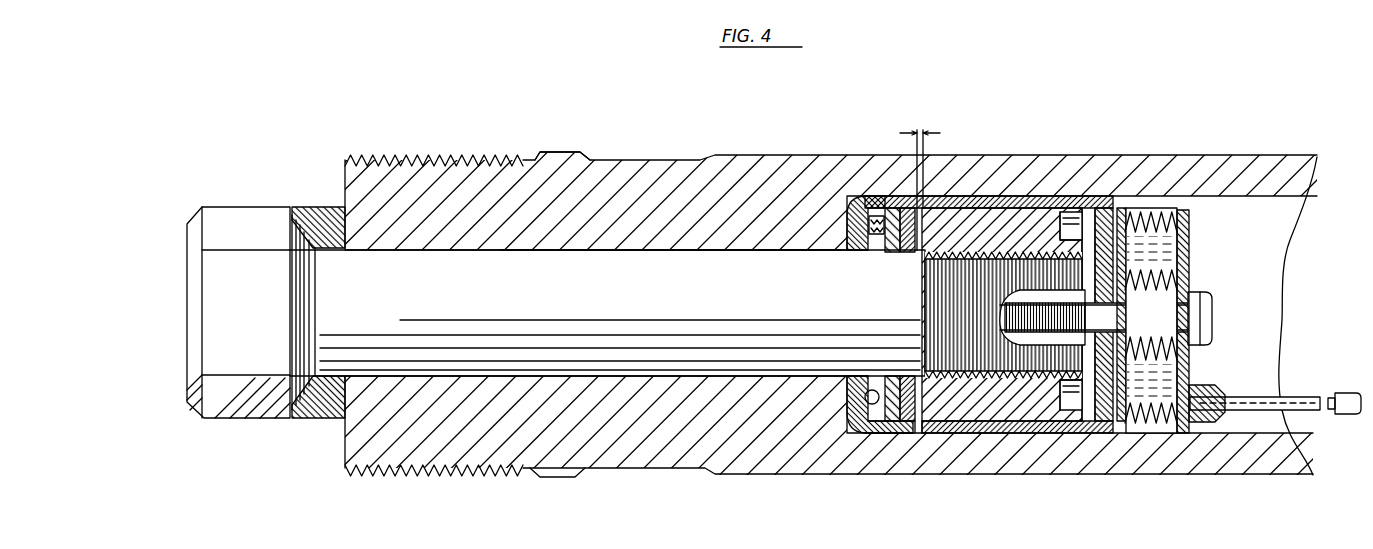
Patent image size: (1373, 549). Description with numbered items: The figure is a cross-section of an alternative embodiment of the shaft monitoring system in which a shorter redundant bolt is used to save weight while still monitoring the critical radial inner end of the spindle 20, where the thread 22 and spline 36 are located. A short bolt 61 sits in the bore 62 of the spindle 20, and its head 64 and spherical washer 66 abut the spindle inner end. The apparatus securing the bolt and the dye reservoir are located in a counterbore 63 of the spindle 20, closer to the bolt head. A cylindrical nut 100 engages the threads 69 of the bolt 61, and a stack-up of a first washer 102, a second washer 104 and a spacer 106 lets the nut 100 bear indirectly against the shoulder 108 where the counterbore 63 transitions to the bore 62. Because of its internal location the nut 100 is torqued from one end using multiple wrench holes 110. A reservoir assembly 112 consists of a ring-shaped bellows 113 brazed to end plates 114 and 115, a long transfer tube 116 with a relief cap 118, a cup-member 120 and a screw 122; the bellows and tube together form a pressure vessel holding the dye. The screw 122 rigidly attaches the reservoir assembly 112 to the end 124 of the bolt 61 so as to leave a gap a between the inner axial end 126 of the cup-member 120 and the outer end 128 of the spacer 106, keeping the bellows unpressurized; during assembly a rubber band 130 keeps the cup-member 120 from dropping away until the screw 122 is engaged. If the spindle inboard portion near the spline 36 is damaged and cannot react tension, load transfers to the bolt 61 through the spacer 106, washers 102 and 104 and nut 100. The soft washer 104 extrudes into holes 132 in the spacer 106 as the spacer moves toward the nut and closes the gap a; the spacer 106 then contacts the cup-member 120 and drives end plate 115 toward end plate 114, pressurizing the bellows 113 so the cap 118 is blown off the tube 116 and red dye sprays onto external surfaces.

The spindle 20 is at (735, 158).
The thread 22 is at (440, 160).
The spline 36 is at (553, 152).
The short bolt 61 is at (546, 302).
The bore 62 is at (600, 250).
The counterbore 63 is at (1283, 258).
The head 64 is at (243, 216).
The spherical washer 66 is at (316, 212).
The threads 69 is at (925, 309).
The cylindrical nut 100 is at (1003, 212).
The first washer 102 is at (912, 252).
The second washer 104 is at (891, 252).
The spacer 106 is at (865, 196).
The shoulder 108 is at (852, 252).
The wrench holes 110 is at (1071, 212).
The reservoir assembly 112 is at (1204, 232).
The bellows 113 is at (1195, 420).
The end plate 114 is at (1189, 240).
The end plate 115 is at (1121, 208).
The transfer tube 116 is at (1293, 396).
The relief cap 118 is at (1343, 416).
The cup-member 120 is at (953, 200).
The screw 122 is at (1207, 322).
The end 124 is at (1058, 236).
The inner axial end 126 is at (920, 435).
The outer end 128 is at (905, 434).
The rubber band 130 is at (1095, 317).
The holes 132 is at (868, 228).
The gap a is at (925, 183).